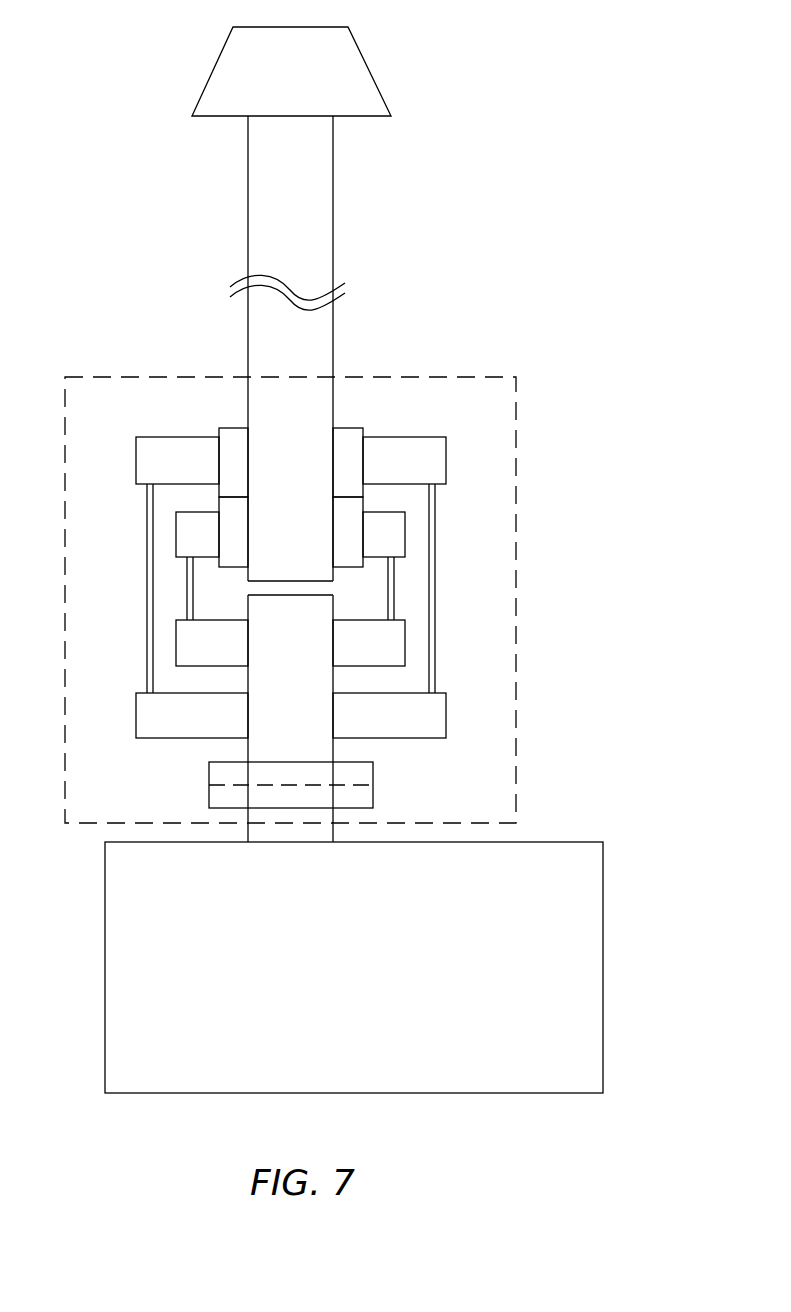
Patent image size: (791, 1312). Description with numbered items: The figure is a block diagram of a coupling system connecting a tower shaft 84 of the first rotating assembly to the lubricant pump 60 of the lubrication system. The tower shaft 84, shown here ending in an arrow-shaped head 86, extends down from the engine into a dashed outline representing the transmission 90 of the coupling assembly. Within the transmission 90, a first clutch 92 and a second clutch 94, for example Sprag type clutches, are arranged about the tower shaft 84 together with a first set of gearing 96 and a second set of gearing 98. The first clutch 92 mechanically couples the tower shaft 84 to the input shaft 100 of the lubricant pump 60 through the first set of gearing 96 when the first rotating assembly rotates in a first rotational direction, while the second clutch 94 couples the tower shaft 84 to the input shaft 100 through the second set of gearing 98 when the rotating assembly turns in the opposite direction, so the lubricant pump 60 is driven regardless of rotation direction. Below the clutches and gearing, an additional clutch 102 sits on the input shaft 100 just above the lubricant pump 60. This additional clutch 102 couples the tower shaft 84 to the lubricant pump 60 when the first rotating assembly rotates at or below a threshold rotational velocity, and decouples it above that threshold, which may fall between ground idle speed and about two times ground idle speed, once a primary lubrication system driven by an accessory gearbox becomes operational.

The lubricant pump 60 is at (371, 982).
The tower shaft 84 is at (333, 220).
The shaft head 86 is at (380, 72).
The transmission 90 is at (518, 418).
The first clutch 92 is at (345, 428).
The second clutch 94 is at (233, 540).
The first set of gearing 96 is at (146, 521).
The second set of gearing 98 is at (184, 604).
The input shaft 100 is at (270, 835).
The additional clutch 102 is at (375, 786).